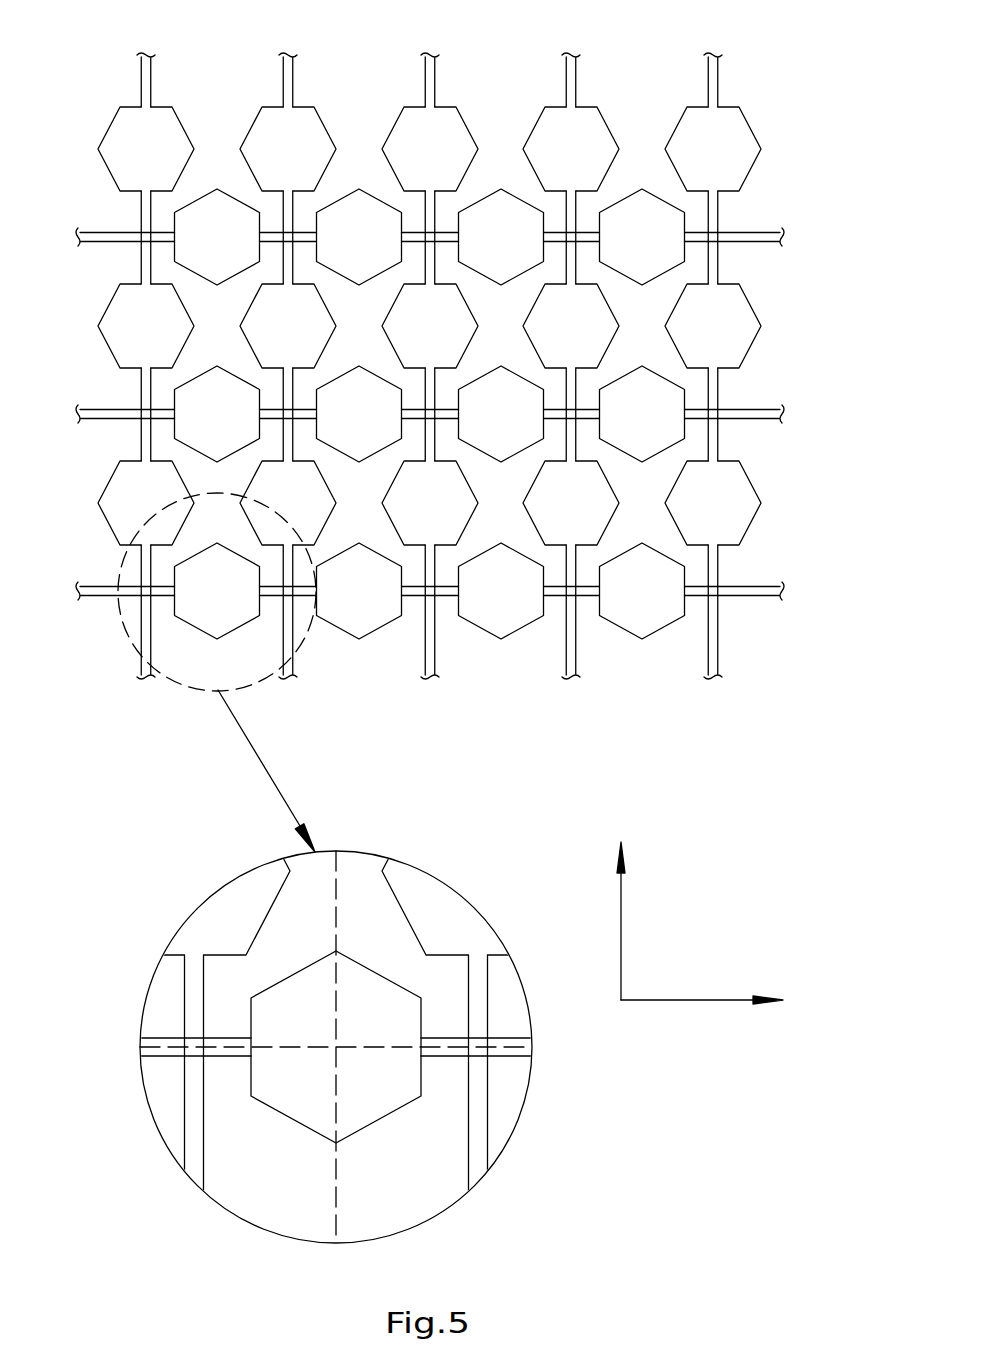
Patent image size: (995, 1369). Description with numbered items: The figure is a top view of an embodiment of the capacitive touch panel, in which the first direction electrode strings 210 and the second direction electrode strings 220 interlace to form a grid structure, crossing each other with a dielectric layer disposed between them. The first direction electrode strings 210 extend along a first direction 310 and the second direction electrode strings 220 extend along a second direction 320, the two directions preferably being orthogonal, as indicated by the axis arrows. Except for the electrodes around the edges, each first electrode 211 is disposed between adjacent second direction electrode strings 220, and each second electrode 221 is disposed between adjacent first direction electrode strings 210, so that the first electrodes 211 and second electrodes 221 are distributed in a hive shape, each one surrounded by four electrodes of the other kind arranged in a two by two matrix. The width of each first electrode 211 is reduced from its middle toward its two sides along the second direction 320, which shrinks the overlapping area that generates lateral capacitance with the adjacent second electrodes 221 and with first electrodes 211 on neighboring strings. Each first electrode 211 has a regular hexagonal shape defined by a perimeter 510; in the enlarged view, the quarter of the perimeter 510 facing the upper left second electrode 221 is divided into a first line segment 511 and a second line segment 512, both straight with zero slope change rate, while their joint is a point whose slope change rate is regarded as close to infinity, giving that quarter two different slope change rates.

The perimeter 510 is at (110, 127).
The first line segment 511 is at (293, 975).
The second line segment 512 is at (252, 1020).
The first electrode 211 is at (648, 203).
The second electrode 221 is at (735, 135).
The second direction electrode string 220 is at (713, 212).
The first direction electrode string 210 is at (696, 233).
The first direction 310 is at (723, 1000).
The second direction 320 is at (622, 906).